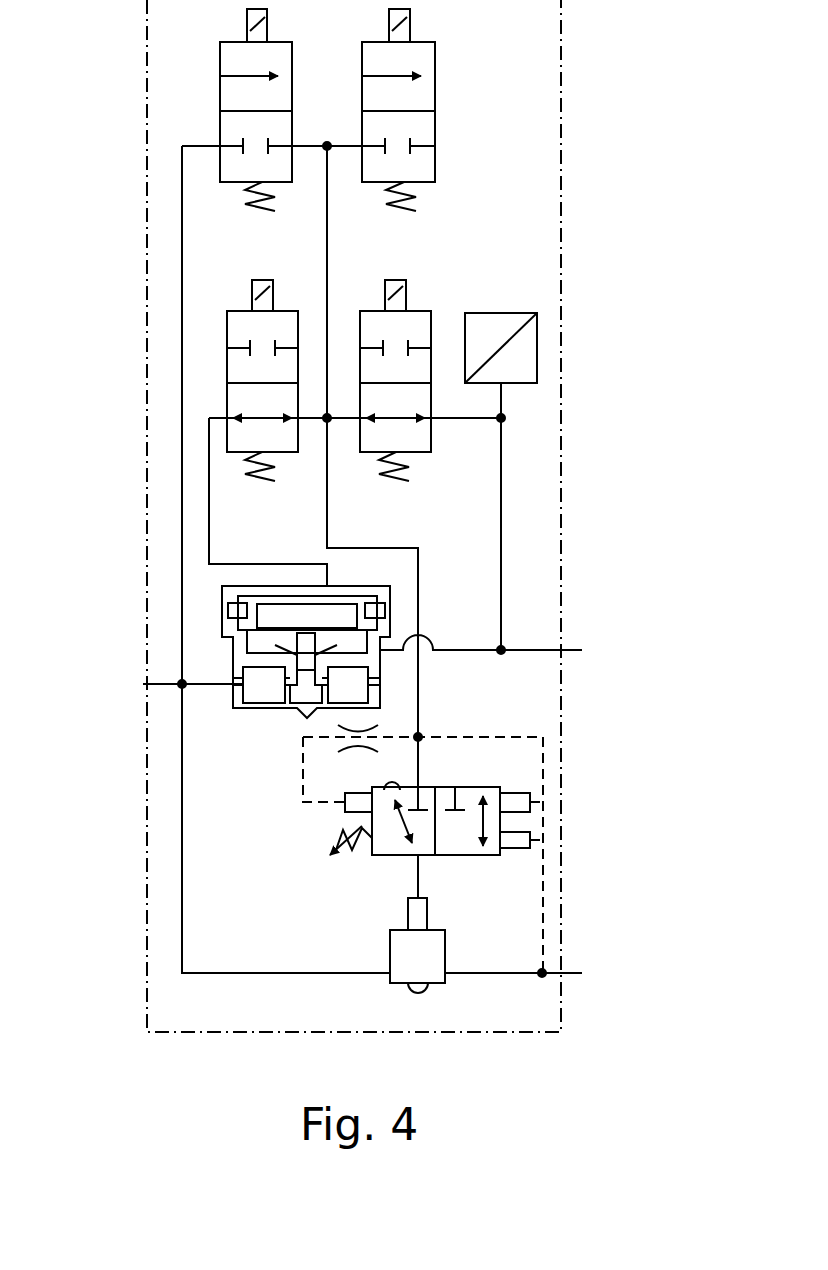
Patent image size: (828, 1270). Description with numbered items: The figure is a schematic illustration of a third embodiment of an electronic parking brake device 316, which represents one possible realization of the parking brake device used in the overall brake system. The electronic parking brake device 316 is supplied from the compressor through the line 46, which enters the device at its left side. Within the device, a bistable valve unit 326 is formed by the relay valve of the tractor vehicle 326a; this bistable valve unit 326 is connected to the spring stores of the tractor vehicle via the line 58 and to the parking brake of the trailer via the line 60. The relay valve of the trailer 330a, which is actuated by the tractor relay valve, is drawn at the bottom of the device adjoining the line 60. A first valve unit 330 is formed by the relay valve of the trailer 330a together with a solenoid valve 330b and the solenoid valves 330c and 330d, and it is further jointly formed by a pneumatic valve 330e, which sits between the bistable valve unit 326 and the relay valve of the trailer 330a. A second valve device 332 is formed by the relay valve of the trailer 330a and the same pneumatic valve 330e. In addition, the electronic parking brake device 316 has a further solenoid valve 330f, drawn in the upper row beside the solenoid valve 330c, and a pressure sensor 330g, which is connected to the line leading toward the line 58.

The line 46 is at (162, 684).
The line 58 is at (570, 648).
The line 60 is at (570, 973).
The electronic parking brake device 316 is at (613, 86).
The bistable valve unit 326 is at (352, 594).
The relay valve of the tractor vehicle 326a is at (260, 710).
The first valve unit 330 is at (613, 284).
The relay valve of the trailer 330a is at (407, 952).
The solenoid valve 330b is at (242, 448).
The solenoid valve 330c is at (241, 187).
The solenoid valve 330d is at (423, 442).
The pneumatic valve 330e is at (470, 805).
The further solenoid valve 330f is at (422, 132).
The pressure sensor 330g is at (508, 322).
The second valve device 332 is at (613, 384).